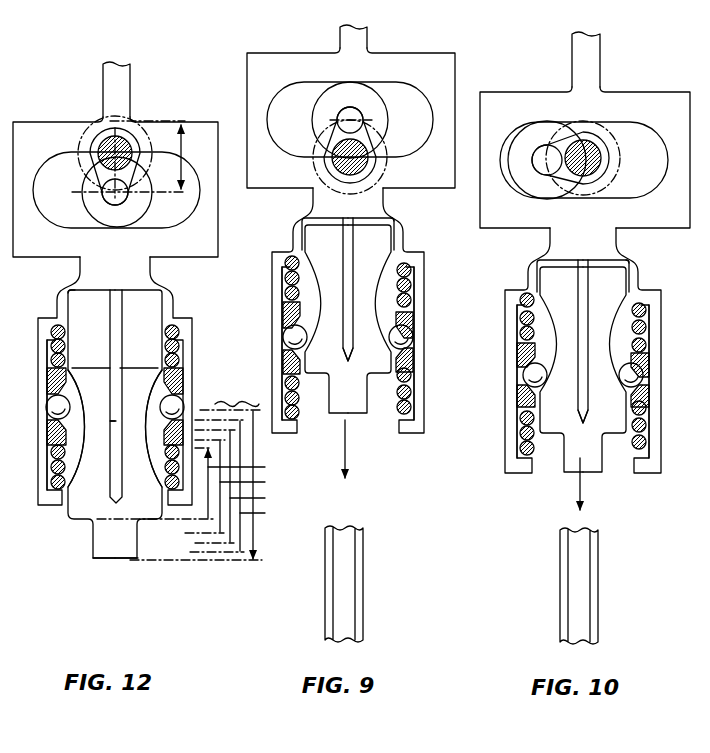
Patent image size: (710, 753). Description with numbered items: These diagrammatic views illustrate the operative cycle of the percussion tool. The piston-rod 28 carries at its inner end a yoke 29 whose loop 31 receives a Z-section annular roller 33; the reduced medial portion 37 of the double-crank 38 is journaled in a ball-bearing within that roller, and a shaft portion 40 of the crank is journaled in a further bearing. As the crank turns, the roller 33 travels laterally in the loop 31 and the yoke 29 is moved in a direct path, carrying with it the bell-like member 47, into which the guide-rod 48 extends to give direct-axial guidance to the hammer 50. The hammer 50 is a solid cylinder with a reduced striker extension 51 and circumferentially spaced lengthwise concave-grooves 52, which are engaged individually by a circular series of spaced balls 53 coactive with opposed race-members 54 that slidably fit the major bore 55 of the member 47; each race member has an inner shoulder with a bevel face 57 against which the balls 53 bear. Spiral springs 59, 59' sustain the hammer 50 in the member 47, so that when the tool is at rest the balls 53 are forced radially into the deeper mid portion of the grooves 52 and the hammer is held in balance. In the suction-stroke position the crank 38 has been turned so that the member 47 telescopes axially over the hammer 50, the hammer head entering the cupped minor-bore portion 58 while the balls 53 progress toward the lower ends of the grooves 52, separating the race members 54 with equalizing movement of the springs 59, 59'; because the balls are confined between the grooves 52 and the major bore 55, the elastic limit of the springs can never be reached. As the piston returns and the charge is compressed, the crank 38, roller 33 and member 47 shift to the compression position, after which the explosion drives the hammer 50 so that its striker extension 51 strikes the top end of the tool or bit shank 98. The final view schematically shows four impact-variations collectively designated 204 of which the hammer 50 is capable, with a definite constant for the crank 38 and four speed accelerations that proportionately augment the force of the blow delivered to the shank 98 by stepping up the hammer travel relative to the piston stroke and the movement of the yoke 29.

In FIG. 12, the piston-rod 28 is at (132, 74).
In FIG. 9, the piston-rod 28 is at (369, 33).
In FIG. 10, the piston-rod 28 is at (602, 48).
In FIG. 12, the yoke 29 is at (49, 122).
In FIG. 9, the yoke 29 is at (440, 53).
In FIG. 10, the yoke 29 is at (668, 92).
In FIG. 12, the loop 31 is at (38, 206).
In FIG. 9, the loop 31 is at (268, 128).
In FIG. 10, the loop 31 is at (526, 130).
In FIG. 12, the Z-section annular roller 33 is at (140, 206).
In FIG. 9, the Z-section annular roller 33 is at (318, 104).
In FIG. 10, the Z-section annular roller 33 is at (541, 124).
In FIG. 12, the reduced medial portion 37 is at (100, 190).
In FIG. 9, the reduced medial portion 37 is at (358, 115).
In FIG. 10, the reduced medial portion 37 is at (545, 162).
In FIG. 12, the double-crank 38 is at (95, 174).
In FIG. 9, the double-crank 38 is at (372, 131).
In FIG. 10, the double-crank 38 is at (562, 174).
In FIG. 12, the shaft portion 40 is at (130, 150).
In FIG. 9, the shaft portion 40 is at (365, 165).
In FIG. 10, the shaft portion 40 is at (601, 158).
In FIG. 12, the bell-like member 47 is at (176, 304).
In FIG. 9, the bell-like member 47 is at (424, 263).
In FIG. 10, the bell-like member 47 is at (661, 295).
In FIG. 12, the guide-rod 48 is at (110, 308).
In FIG. 9, the guide-rod 48 is at (342, 222).
In FIG. 10, the guide-rod 48 is at (577, 273).
In FIG. 12, the hammer 50 is at (141, 368).
In FIG. 9, the hammer 50 is at (398, 229).
In FIG. 10, the hammer 50 is at (609, 288).
In FIG. 12, the striker extension 51 is at (112, 558).
In FIG. 9, the striker extension 51 is at (363, 421).
In FIG. 10, the striker extension 51 is at (598, 470).
In FIG. 12, the concave-grooves 52 is at (152, 470).
In FIG. 9, the concave-grooves 52 is at (391, 262).
In FIG. 10, the concave-grooves 52 is at (622, 322).
In FIG. 12, the balls 53 is at (158, 404).
In FIG. 9, the balls 53 is at (302, 345).
In FIG. 10, the balls 53 is at (618, 376).
In FIG. 12, the race-members 54 is at (47, 431).
In FIG. 9, the race-members 54 is at (412, 366).
In FIG. 10, the race-members 54 is at (650, 393).
In FIG. 12, the major bore 55 is at (47, 345).
In FIG. 9, the major bore 55 is at (404, 390).
In FIG. 10, the major bore 55 is at (655, 440).
In FIG. 12, the bevel face 57 is at (47, 418).
In FIG. 9, the bevel face 57 is at (413, 341).
In FIG. 10, the bevel face 57 is at (644, 380).
In FIG. 12, the minor-bore portion 58 is at (66, 302).
In FIG. 9, the minor-bore portion 58 is at (396, 220).
In FIG. 10, the minor-bore portion 58 is at (630, 269).
In FIG. 12, the spiral spring 59 is at (137, 346).
In FIG. 9, the spiral spring 59 is at (325, 281).
In FIG. 10, the spiral spring 59 is at (560, 322).
In FIG. 12, the spiral spring 59' is at (93, 467).
In FIG. 9, the spiral spring 59' is at (374, 393).
In FIG. 10, the spiral spring 59' is at (557, 428).
In FIG. 9, the tool or bit shank 98 is at (364, 594).
In FIG. 10, the tool or bit shank 98 is at (600, 589).
In FIG. 12, the impact-variations 204 is at (187, 470).